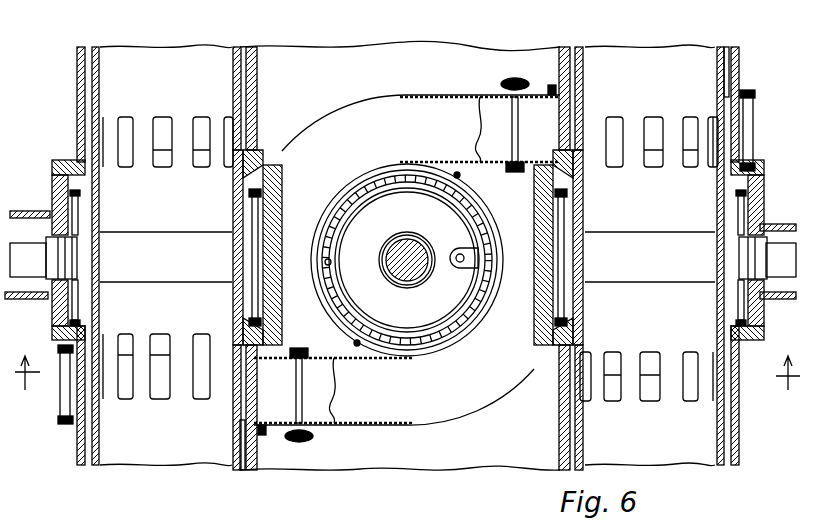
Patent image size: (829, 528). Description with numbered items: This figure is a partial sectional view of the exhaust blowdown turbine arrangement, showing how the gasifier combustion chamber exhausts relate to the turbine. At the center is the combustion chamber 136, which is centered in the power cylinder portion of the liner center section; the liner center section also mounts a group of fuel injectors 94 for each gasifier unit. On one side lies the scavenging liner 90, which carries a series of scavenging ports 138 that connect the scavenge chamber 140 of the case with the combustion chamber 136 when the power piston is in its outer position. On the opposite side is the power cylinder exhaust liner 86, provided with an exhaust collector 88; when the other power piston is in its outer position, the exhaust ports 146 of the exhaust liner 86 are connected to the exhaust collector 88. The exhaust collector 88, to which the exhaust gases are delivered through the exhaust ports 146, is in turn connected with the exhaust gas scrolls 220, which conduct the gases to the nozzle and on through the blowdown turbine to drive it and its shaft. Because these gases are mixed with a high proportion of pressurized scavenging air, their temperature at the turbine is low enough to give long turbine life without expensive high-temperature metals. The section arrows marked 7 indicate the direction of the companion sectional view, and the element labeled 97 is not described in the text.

The scavenge chamber 140 is at (322, 55).
The scavenging liner 90 is at (258, 65).
The power cylinder exhaust liner 86 is at (735, 52).
The exhaust collector 88 is at (748, 102).
The fuel injectors 94 is at (760, 227).
The shaft end 97 is at (50, 262).
The combustion chamber 136 is at (232, 252).
The scavenging ports 138 is at (130, 126).
The exhaust ports 146 is at (650, 130).
The exhaust gas scrolls 220 is at (378, 123).
The section line 7 is at (407, 367).